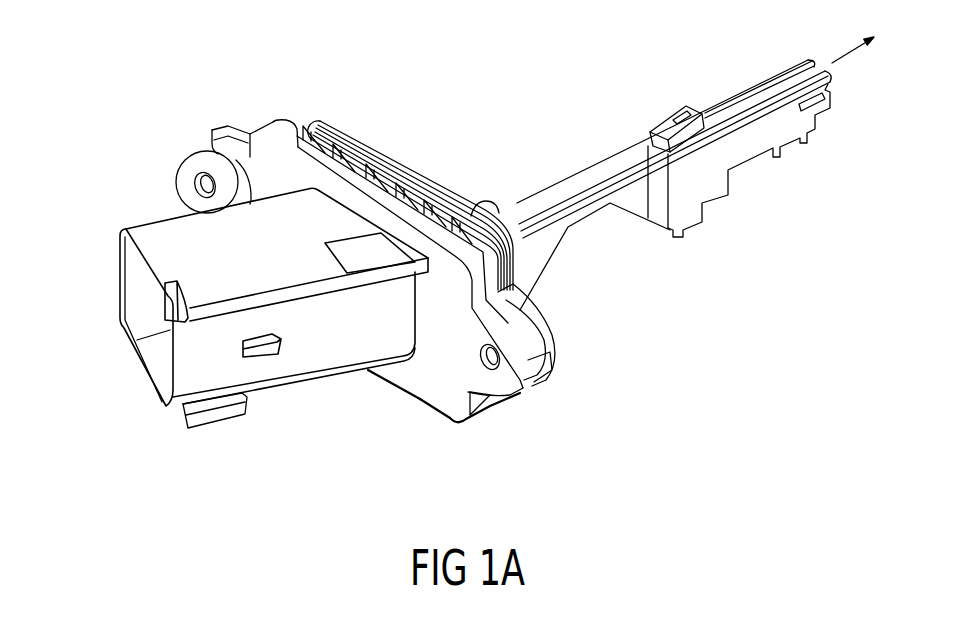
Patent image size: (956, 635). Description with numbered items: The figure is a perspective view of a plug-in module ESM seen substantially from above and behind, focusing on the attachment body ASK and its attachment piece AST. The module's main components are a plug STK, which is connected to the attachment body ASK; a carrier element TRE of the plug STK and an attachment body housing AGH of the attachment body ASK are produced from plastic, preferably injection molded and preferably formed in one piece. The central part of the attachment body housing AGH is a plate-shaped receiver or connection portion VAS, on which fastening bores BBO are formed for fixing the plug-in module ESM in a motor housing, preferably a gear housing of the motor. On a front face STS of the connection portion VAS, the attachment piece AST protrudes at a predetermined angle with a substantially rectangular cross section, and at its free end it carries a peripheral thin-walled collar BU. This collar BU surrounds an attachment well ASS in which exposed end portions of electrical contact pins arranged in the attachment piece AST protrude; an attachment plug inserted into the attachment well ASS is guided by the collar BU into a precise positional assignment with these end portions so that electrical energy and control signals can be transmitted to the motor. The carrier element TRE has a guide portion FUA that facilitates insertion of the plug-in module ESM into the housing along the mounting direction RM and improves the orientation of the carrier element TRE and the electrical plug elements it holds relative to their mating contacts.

The plug-in module ESM is at (462, 95).
The mounting direction RM is at (847, 38).
The carrier element TRE is at (627, 142).
The guide portion FUA is at (570, 187).
The fastening bores BBO is at (195, 188).
The attachment piece AST is at (148, 239).
The plug STK is at (629, 246).
The attachment well ASS is at (157, 357).
The collar BU is at (156, 404).
The attachment body housing AGH is at (286, 395).
The front face STS is at (414, 390).
The connection portion VAS is at (457, 423).
The attachment body ASK is at (565, 486).